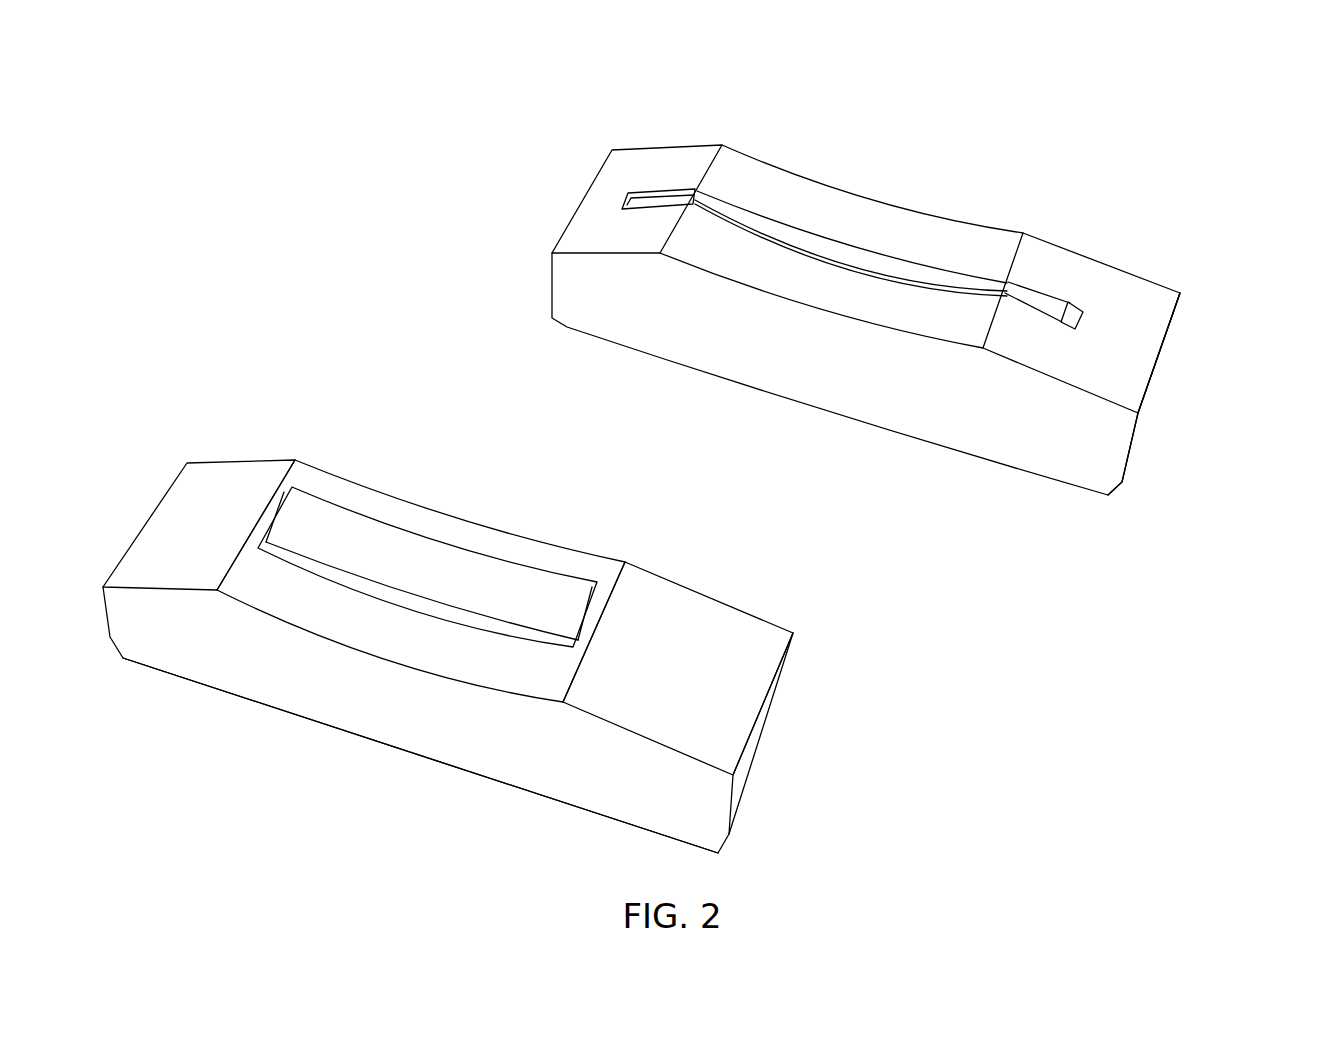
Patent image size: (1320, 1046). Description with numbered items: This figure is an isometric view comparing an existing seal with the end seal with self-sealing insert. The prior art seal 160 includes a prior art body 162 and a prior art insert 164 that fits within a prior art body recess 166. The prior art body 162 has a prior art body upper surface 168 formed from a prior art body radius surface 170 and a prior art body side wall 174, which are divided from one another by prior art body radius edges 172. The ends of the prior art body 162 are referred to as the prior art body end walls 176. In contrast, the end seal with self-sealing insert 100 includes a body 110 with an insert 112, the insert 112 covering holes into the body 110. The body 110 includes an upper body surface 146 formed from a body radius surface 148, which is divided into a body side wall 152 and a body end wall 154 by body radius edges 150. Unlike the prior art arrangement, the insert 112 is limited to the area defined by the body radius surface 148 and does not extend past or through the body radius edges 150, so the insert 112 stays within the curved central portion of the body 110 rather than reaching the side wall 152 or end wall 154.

The end seal with self-sealing insert 100 is at (797, 592).
The body 110 is at (603, 778).
The insert 112 is at (483, 573).
The upper body surface 146 is at (404, 455).
The body radius surface 148 is at (400, 638).
The body radius edges 150 is at (265, 500).
The body side wall 152 is at (198, 483).
The body end wall 154 is at (758, 743).
The prior art seal 160 is at (1192, 259).
The prior art body 162 is at (963, 415).
The prior art insert 164 is at (940, 278).
The prior art body recess 166 is at (1072, 307).
The prior art body upper surface 168 is at (875, 175).
The prior art body radius surface 170 is at (780, 193).
The prior art body radius edges 172 is at (702, 170).
The prior art body side wall 174 is at (633, 163).
The prior art body end walls 176 is at (1140, 438).